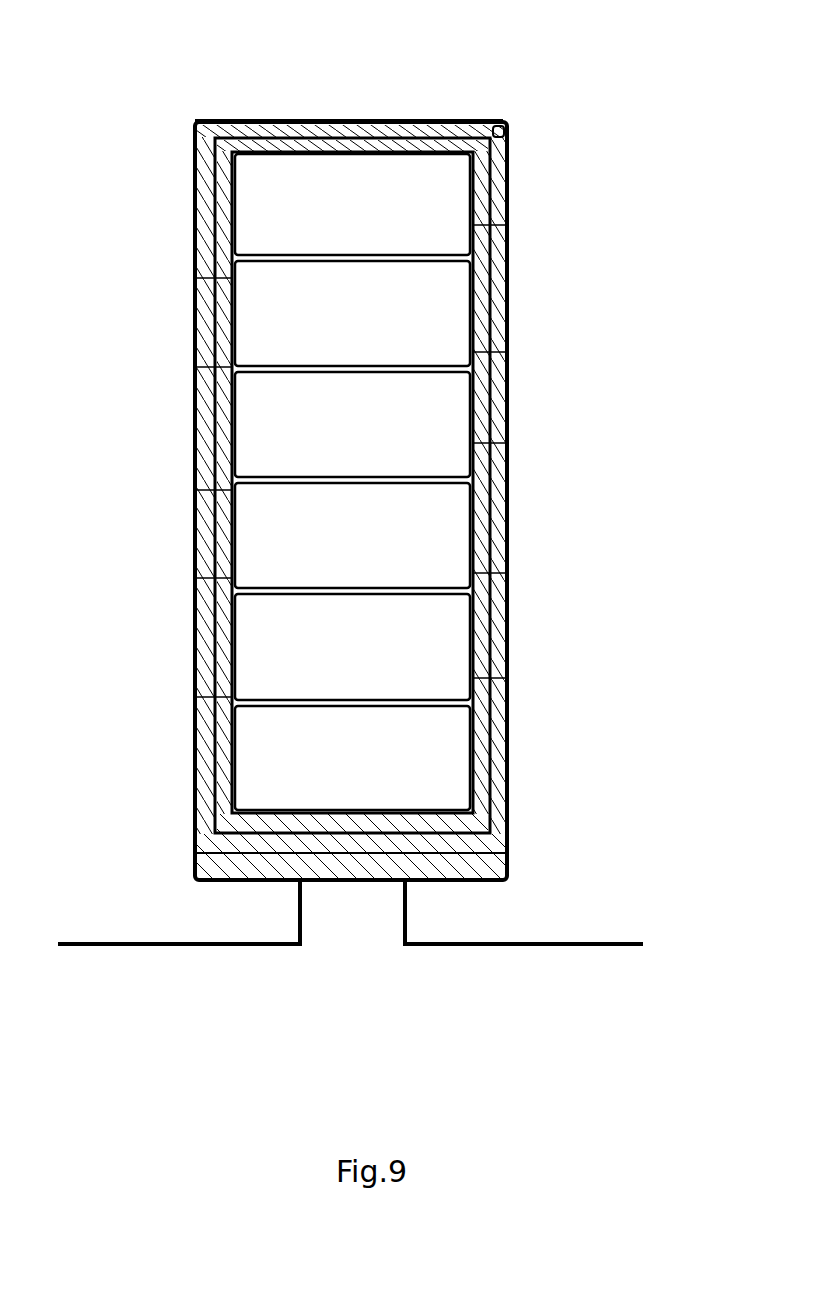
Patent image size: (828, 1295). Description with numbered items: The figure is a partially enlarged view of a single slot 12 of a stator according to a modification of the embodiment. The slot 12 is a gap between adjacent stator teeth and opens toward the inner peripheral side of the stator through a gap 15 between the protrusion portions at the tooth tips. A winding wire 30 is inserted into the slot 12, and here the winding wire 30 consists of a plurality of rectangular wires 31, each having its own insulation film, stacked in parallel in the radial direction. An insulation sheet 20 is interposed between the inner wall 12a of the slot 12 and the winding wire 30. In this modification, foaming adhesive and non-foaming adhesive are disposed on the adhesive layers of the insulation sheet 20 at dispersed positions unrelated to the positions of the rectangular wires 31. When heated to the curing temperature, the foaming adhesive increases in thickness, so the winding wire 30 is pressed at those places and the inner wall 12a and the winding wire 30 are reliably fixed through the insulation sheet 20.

The slot 12 is at (326, 118).
The inner wall of the slot 12a is at (495, 118).
The insulation sheet 20 is at (509, 198).
The winding wire 30 is at (250, 190).
The rectangular wires 31 is at (437, 318).
The gap 15 is at (348, 900).